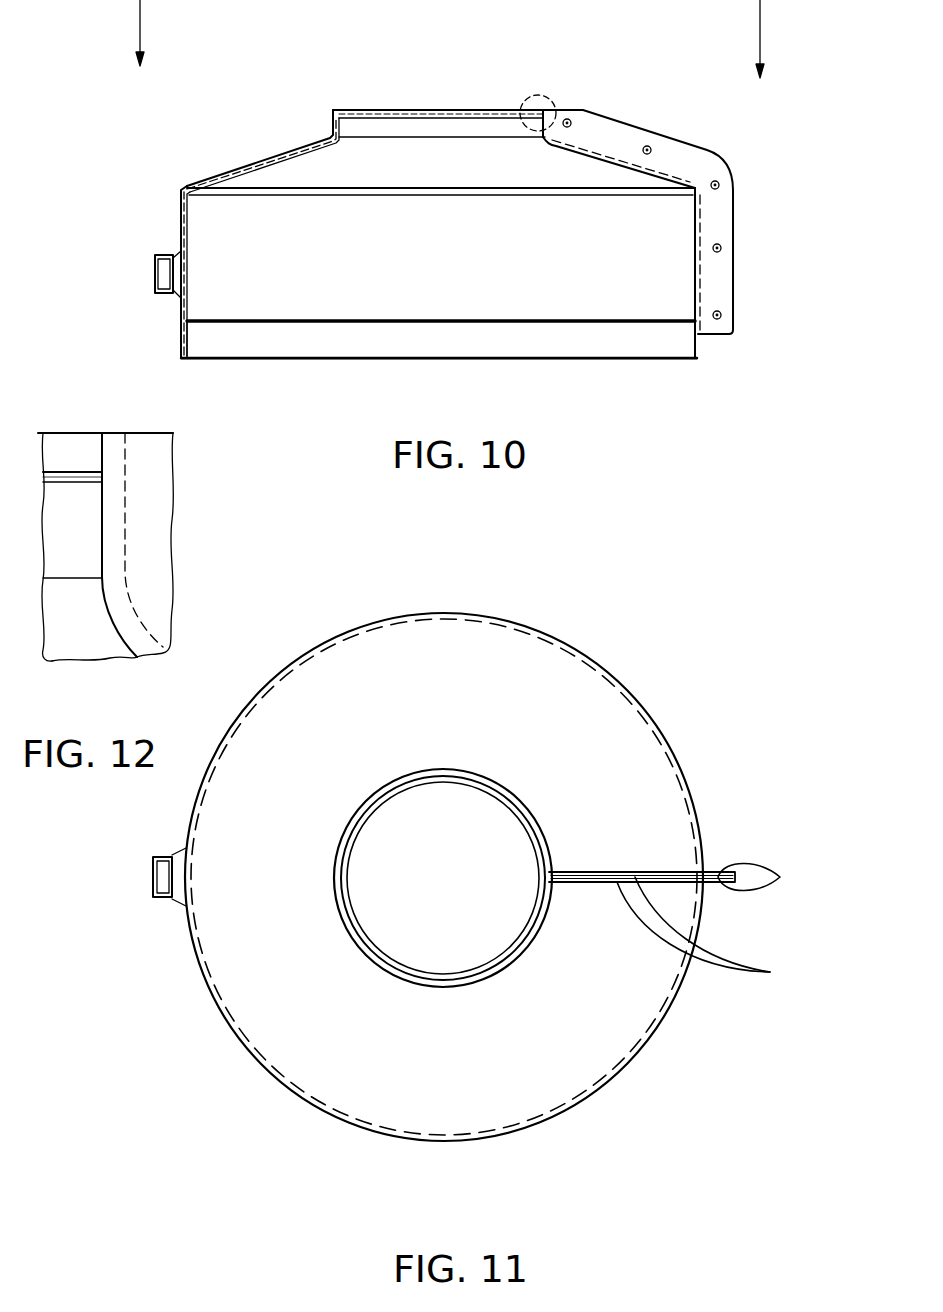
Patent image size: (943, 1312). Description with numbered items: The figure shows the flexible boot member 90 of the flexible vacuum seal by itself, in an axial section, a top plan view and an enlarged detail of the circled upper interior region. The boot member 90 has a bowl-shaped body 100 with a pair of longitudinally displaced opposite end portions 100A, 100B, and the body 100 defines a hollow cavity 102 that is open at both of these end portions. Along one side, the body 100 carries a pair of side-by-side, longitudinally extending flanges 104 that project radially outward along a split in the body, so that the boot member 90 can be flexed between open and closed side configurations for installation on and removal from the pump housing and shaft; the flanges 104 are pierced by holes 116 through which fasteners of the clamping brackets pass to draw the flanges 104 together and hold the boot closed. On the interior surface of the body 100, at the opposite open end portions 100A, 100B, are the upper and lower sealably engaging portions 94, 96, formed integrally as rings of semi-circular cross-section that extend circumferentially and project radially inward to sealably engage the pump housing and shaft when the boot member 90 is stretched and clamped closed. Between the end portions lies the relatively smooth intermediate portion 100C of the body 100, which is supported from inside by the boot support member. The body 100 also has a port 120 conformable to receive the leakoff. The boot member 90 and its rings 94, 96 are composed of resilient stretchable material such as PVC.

In FIG. 12, the flexible boot member 90 is at (98, 425).
In FIG. 10, the upper sealably engaging ring 94 is at (470, 118).
In FIG. 12, the upper sealably engaging ring 94 is at (72, 478).
In FIG. 11, the upper sealably engaging ring 94 is at (503, 952).
In FIG. 10, the lower sealably engaging ring 96 is at (520, 323).
In FIG. 10, the bowl-shaped body 100 is at (593, 366).
In FIG. 12, the bowl-shaped body 100 is at (68, 648).
In FIG. 11, the bowl-shaped body 100 is at (682, 749).
In FIG. 10, the upper end portion 100A is at (405, 107).
In FIG. 12, the upper end portion 100A is at (72, 432).
In FIG. 11, the upper end portion 100A is at (370, 942).
In FIG. 10, the lower end portion 100B is at (415, 360).
In FIG. 10, the intermediate portion 100C is at (250, 162).
In FIG. 11, the intermediate portion 100C is at (318, 813).
In FIG. 10, the hollow cavity 102 is at (466, 287).
In FIG. 10, the flanges 104 is at (708, 152).
In FIG. 12, the flanges 104 is at (155, 568).
In FIG. 11, the flanges 104 is at (780, 877).
In FIG. 10, the holes 116 is at (571, 121).
In FIG. 10, the port 120 is at (165, 250).
In FIG. 11, the port 120 is at (158, 900).